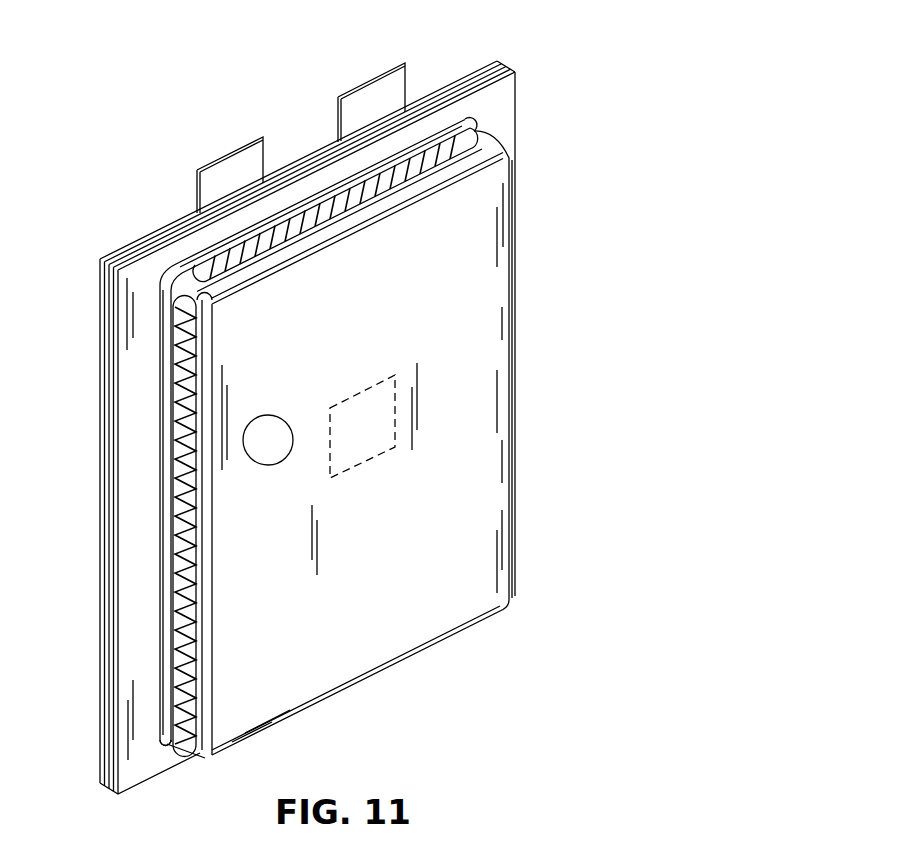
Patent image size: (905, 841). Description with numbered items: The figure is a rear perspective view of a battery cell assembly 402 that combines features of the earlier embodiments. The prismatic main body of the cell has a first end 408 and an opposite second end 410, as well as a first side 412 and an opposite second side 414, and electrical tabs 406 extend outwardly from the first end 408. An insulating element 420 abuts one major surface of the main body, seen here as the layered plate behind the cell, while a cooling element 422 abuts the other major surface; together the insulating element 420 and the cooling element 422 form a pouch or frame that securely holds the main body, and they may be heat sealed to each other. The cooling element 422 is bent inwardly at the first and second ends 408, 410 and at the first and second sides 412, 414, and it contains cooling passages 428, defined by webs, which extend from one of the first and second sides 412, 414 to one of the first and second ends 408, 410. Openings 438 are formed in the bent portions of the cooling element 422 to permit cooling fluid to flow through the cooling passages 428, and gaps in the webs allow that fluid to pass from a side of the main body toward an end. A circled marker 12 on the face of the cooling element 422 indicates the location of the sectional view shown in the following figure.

The battery cell assembly 402 is at (527, 32).
The electrical tabs 406 is at (243, 167).
The first end 408 is at (428, 75).
The second end 410 is at (383, 712).
The first side 412 is at (538, 340).
The second side 414 is at (302, 398).
The insulating element 420 is at (101, 292).
The cooling element 422 is at (360, 381).
The cooling passages 428 is at (252, 264).
The openings 438 is at (478, 130).
The sensor 12 is at (329, 440).